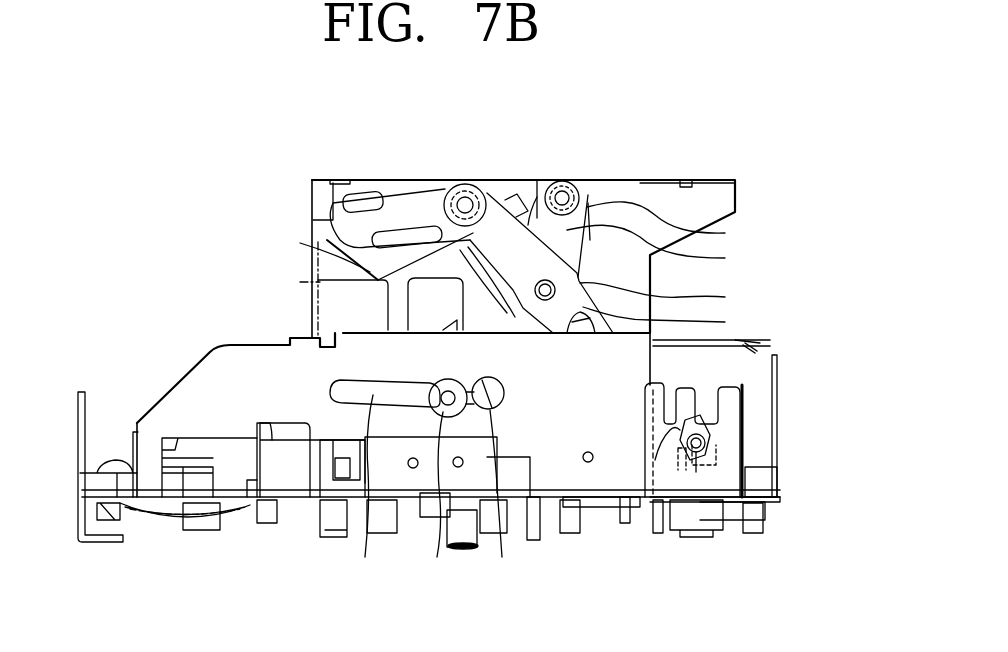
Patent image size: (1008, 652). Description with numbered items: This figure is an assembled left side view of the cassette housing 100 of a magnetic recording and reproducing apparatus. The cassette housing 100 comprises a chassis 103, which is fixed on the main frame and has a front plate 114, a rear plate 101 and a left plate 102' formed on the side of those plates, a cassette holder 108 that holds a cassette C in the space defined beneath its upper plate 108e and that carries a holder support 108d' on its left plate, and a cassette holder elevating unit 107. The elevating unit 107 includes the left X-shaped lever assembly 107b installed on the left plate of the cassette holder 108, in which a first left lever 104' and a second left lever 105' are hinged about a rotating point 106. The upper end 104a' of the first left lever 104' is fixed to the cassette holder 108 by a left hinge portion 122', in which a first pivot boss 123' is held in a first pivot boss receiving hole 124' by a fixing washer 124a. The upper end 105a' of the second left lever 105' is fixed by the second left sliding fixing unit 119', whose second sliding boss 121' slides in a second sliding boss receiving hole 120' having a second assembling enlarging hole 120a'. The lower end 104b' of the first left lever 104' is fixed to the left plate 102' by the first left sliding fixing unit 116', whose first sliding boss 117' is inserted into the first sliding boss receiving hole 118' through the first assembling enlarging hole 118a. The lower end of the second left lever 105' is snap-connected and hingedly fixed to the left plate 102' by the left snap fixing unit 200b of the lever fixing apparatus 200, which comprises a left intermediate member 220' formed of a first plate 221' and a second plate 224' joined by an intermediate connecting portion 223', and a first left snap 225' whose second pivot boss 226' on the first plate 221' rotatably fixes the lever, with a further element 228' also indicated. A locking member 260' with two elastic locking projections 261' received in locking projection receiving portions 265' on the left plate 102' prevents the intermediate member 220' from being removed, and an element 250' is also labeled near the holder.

The cassette housing 100 is at (140, 130).
The rear plate 101 is at (78, 427).
The left plate 102' is at (176, 412).
The chassis 103 is at (182, 373).
The first left lever 104' is at (671, 248).
The upper end of the first left lever 104a' is at (687, 266).
The lower end of the first left lever 104b' is at (417, 378).
The second left lever 105' is at (437, 263).
The upper end of the second left lever 105a' is at (472, 169).
The rotating point 106 is at (725, 323).
The cassette holder elevating unit 107 is at (597, 290).
The left X-shaped lever assembly 107b is at (584, 278).
The cassette holder 108 is at (664, 180).
The holder support 108d' is at (799, 344).
The upper plate 108e is at (628, 180).
The front plate 114 is at (779, 470).
The first left sliding fixing unit 116' is at (405, 604).
The first sliding boss 117' is at (462, 498).
The first sliding boss receiving hole 118' is at (404, 489).
The first assembling enlarging hole 118a is at (488, 498).
The second left sliding fixing unit 119' is at (385, 98).
The second sliding boss receiving hole 120' is at (400, 180).
The second assembling enlarging hole 120a' is at (370, 268).
The second sliding boss 121' is at (396, 181).
The left hinge portion 122' is at (560, 98).
The first pivot boss 123' is at (577, 164).
The first pivot boss receiving hole 124' is at (528, 169).
The fixing washer 124a is at (582, 190).
The trip unit 200 is at (797, 345).
The left snap fixing unit 200b is at (746, 442).
The left intermediate member 220' is at (685, 604).
The first plate 221' is at (658, 499).
The intermediate connecting portion 223' is at (735, 525).
The second plate 224' is at (695, 533).
The first left snap 225' is at (890, 518).
The second pivot boss 226' is at (754, 504).
The terminal base 228' is at (779, 525).
The trip lever 250' is at (758, 314).
The locking member 260' is at (595, 424).
The elastic locking projections 261' is at (628, 422).
The locking projection receiving portions 265' is at (643, 434).
The cassette C is at (318, 313).